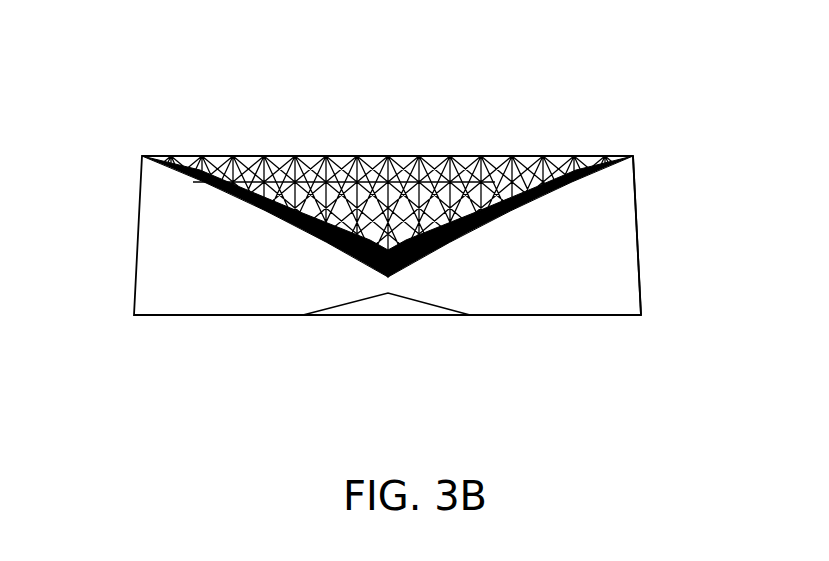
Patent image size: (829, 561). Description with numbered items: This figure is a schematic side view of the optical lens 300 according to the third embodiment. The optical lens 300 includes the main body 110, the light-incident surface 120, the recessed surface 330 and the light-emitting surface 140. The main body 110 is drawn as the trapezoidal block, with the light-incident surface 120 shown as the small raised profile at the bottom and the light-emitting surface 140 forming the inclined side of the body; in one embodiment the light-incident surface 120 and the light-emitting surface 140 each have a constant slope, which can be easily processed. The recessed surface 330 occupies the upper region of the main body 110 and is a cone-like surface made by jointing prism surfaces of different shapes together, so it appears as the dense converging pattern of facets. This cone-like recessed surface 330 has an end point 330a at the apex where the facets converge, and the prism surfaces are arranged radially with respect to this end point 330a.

The optical lens 300 is at (103, 75).
The main body 110 is at (150, 224).
The light-incident surface 120 is at (428, 314).
The light-emitting surface 140 is at (646, 268).
The recessed surface 330 is at (495, 157).
The end point 330a is at (386, 277).